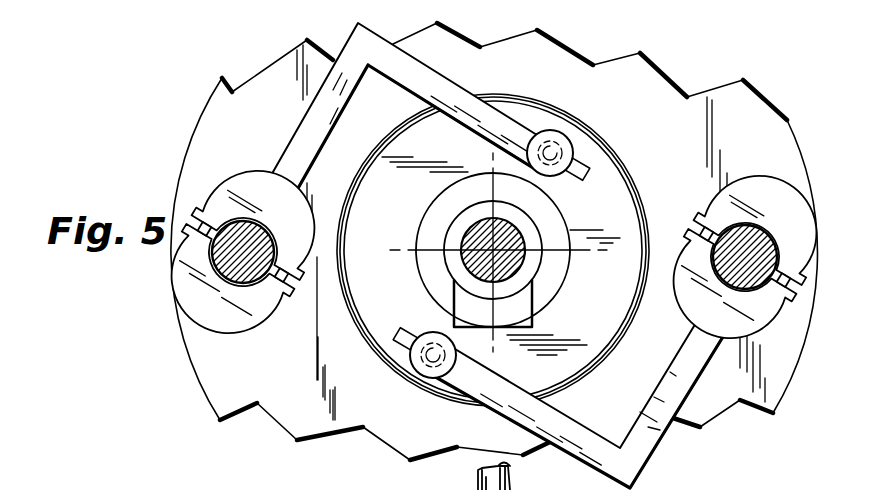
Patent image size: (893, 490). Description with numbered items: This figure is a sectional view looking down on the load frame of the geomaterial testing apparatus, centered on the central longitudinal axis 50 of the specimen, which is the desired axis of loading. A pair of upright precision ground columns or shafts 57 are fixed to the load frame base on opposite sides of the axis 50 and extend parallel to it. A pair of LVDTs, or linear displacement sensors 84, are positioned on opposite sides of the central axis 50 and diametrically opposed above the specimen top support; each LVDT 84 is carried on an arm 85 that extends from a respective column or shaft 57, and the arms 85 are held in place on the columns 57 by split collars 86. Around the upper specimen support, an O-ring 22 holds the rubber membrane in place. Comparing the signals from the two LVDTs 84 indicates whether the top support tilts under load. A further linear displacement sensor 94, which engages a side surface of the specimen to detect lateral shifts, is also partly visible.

The O-ring 22 is at (607, 187).
The central longitudinal axis 50 is at (512, 241).
The upright precision ground columns 57 is at (753, 233).
The LVDTs (linear displacement sensors) 84 is at (560, 146).
The arms 85 is at (318, 106).
The split collars 86 is at (233, 206).
The linear displacement sensors 94 is at (514, 478).